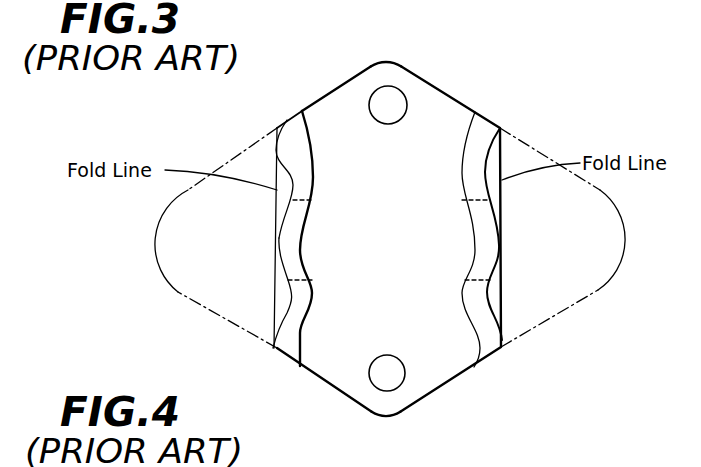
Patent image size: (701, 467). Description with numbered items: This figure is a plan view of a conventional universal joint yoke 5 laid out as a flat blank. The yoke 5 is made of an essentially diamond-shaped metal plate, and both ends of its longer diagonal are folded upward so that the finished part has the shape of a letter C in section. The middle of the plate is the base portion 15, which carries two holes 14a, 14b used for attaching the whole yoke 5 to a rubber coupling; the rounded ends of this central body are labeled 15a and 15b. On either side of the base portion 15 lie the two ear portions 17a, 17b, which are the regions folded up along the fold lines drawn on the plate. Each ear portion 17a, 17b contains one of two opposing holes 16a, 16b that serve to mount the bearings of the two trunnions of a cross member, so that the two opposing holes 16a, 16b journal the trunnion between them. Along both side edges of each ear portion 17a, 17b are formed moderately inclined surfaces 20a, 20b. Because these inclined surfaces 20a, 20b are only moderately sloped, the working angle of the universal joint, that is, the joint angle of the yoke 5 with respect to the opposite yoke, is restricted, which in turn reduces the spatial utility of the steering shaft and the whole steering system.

The yoke 5 is at (478, 97).
The hole 14a is at (400, 373).
The hole 14b is at (390, 105).
The base portion 15 is at (338, 96).
The lower rounded end 15a is at (392, 416).
The upper rounded end 15b is at (393, 63).
The opposing hole 16a is at (277, 264).
The opposing hole 16b is at (498, 265).
The ear portion 17a is at (302, 323).
The ear portion 17b is at (488, 333).
The moderately inclined surface 20a is at (277, 348).
The moderately inclined surface 20b is at (277, 127).